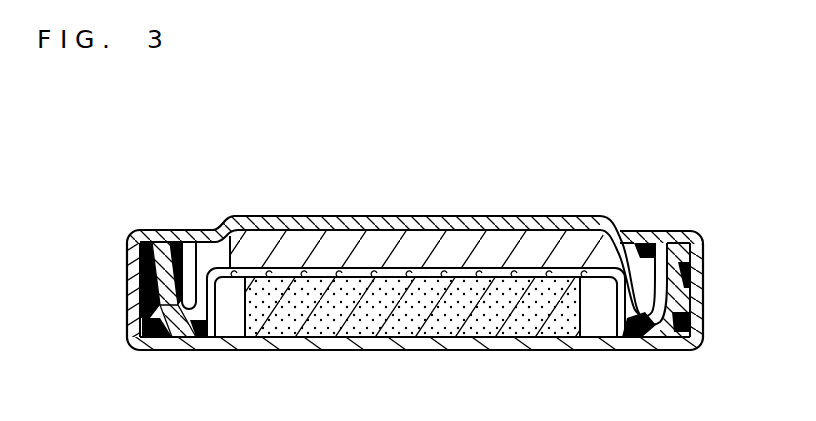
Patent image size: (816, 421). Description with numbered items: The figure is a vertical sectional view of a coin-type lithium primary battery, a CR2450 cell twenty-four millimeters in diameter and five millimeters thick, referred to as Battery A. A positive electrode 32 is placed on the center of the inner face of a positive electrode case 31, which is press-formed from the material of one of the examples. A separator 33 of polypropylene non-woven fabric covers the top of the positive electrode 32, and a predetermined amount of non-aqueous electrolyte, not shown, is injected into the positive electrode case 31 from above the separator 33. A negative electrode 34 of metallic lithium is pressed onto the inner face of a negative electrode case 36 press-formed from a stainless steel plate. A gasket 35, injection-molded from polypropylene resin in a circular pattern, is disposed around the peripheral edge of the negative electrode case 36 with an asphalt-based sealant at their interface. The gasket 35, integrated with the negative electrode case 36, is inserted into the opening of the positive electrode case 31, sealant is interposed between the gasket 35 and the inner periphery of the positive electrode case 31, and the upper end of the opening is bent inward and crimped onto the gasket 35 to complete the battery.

The positive electrode case 31 is at (627, 347).
The positive electrode 32 is at (328, 318).
The separator 33 is at (304, 270).
The negative electrode 34 is at (382, 245).
The gasket 35 is at (671, 252).
The negative electrode case 36 is at (493, 225).